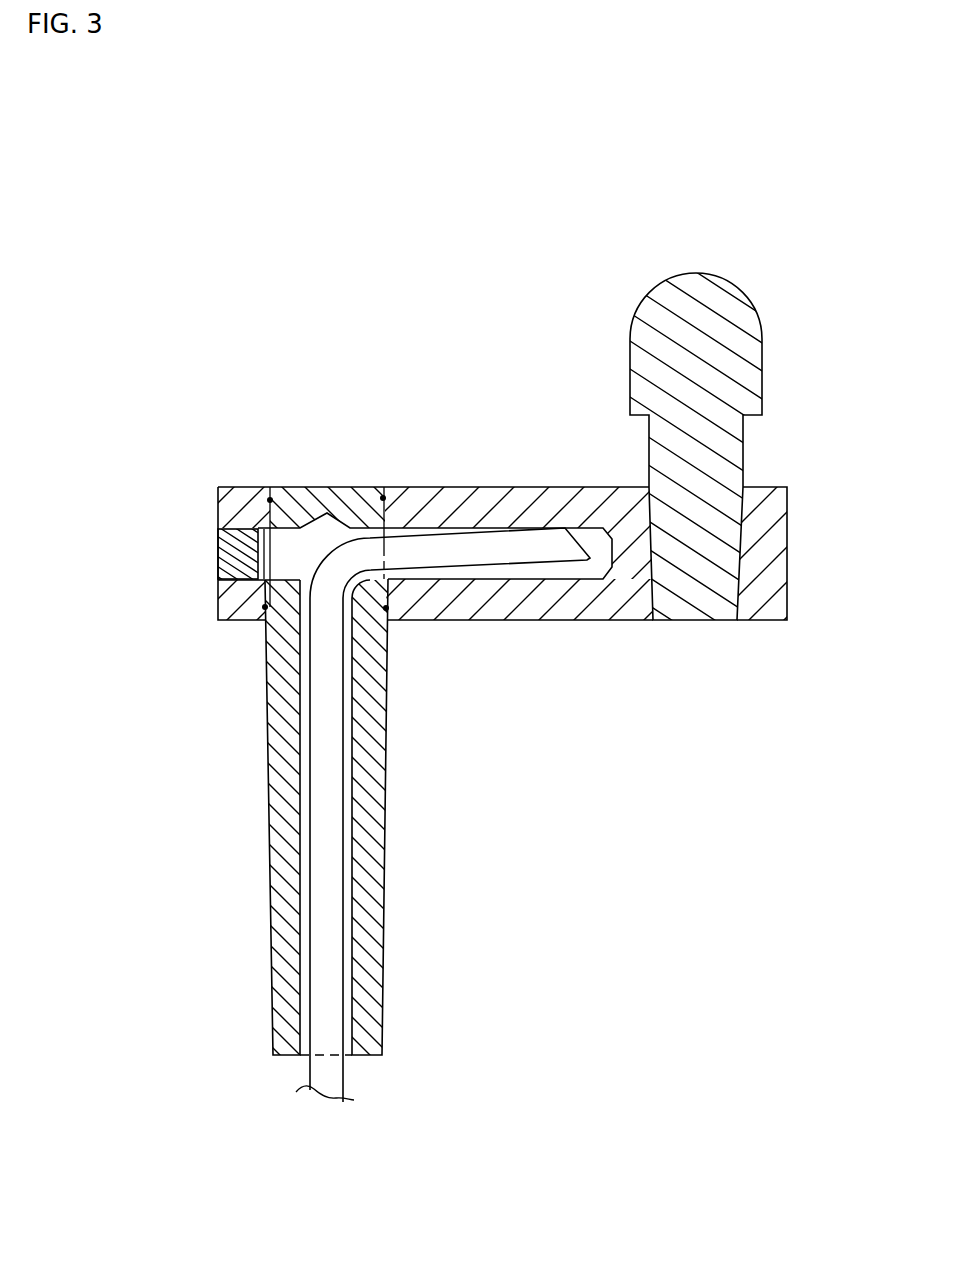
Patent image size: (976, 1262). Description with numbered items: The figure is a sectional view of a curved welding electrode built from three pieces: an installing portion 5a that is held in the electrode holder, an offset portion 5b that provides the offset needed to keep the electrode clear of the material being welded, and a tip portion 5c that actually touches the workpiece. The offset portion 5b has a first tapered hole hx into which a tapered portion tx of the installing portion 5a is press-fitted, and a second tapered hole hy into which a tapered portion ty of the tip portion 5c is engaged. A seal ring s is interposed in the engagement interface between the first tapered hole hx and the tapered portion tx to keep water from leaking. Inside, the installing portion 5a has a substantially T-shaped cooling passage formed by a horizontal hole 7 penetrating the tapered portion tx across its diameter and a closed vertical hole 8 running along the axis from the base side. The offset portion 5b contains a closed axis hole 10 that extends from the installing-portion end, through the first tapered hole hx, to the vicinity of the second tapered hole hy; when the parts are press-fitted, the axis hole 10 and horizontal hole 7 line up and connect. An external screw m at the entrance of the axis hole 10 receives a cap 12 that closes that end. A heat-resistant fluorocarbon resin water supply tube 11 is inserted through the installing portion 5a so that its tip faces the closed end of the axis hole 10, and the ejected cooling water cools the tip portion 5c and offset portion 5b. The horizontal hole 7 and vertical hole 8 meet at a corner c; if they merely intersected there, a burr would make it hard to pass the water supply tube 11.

The installing portion 5a is at (378, 800).
The offset portion 5b is at (472, 493).
The tip portion 5c is at (723, 443).
The horizontal hole 7 is at (280, 528).
The vertical hole 8 is at (347, 828).
The axis hole 10 is at (552, 579).
The water supply tube 11 is at (320, 878).
The cap 12 is at (240, 553).
The seal ring s is at (383, 497).
The tapered portion of the installing portion tx is at (331, 496).
The tapered portion of the tip portion ty is at (700, 603).
The first tapered hole hx is at (265, 642).
The second tapered hole hy is at (658, 590).
The corner c is at (387, 612).
The external screw m is at (222, 568).